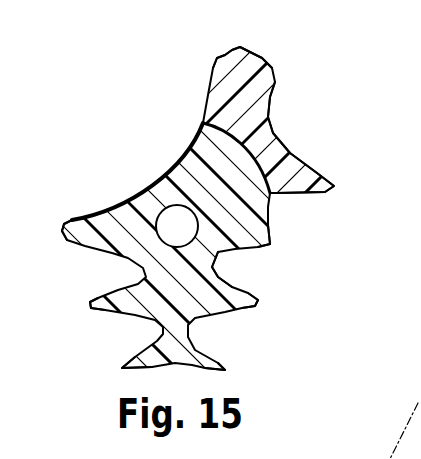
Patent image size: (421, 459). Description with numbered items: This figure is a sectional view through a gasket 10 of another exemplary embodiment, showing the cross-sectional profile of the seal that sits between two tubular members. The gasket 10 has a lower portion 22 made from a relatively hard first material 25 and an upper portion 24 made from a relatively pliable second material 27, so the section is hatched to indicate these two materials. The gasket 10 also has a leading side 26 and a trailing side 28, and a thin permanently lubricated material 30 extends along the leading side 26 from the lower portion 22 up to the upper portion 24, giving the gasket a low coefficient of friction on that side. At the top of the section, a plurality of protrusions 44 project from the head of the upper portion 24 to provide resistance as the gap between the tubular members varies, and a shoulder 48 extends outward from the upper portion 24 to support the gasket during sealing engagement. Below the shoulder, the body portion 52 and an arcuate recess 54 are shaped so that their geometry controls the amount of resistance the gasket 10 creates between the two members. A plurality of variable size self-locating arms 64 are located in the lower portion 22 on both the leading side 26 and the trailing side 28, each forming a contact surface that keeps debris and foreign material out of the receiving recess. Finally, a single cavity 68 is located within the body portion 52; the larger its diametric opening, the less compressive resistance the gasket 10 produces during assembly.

The gasket 10 is at (118, 86).
The lower portion 22 is at (321, 346).
The upper portion 24 is at (334, 82).
The first material 25 is at (212, 305).
The leading side 26 is at (68, 270).
The second material 27 is at (243, 104).
The trailing side 28 is at (358, 266).
The permanently lubricated material 30 is at (201, 132).
The protrusions 44 is at (270, 62).
The shoulder 48 is at (335, 186).
The body portion 52 is at (250, 193).
The arcuate recess 54 is at (275, 138).
The self-locating arms 64 is at (71, 223).
The single cavity 68 is at (167, 222).